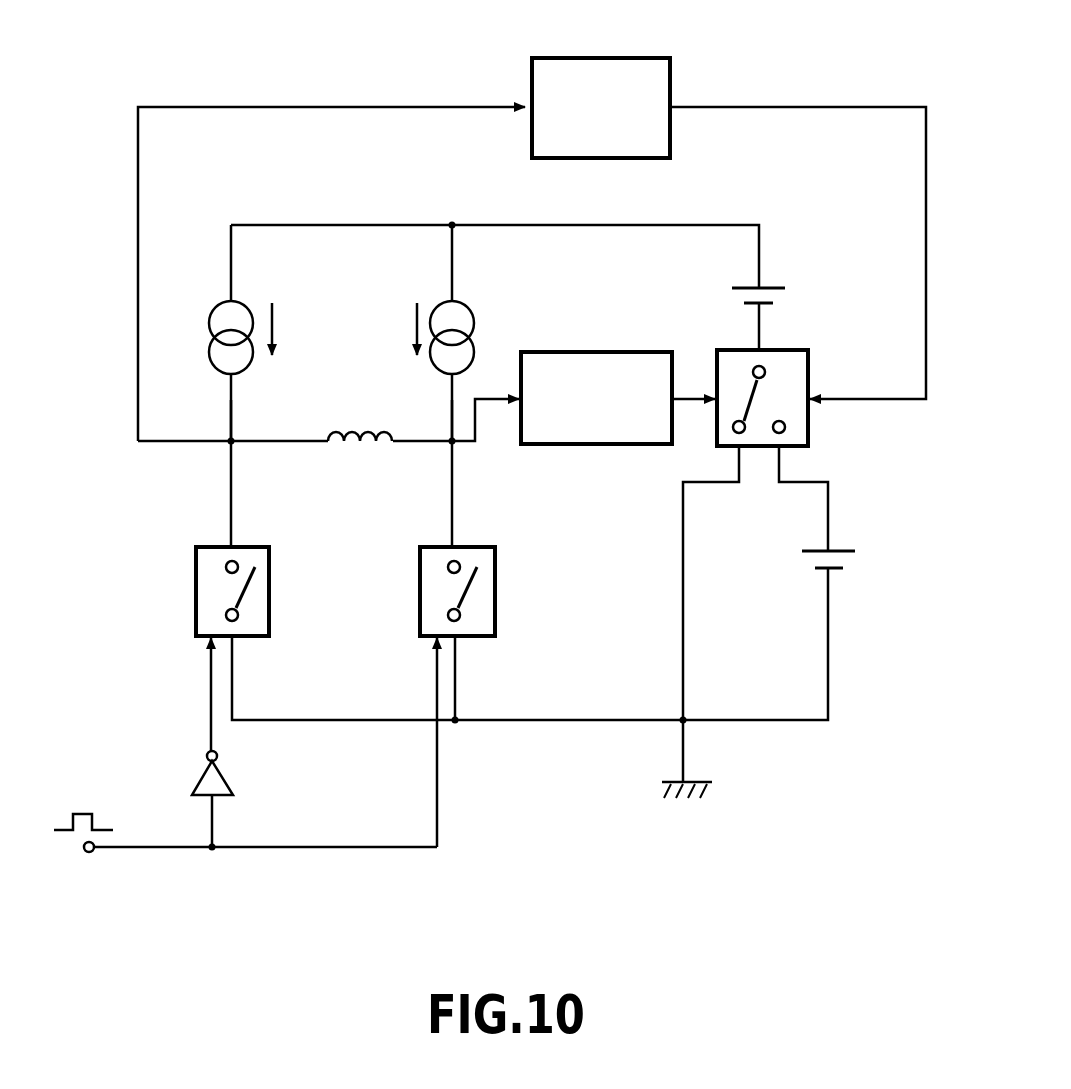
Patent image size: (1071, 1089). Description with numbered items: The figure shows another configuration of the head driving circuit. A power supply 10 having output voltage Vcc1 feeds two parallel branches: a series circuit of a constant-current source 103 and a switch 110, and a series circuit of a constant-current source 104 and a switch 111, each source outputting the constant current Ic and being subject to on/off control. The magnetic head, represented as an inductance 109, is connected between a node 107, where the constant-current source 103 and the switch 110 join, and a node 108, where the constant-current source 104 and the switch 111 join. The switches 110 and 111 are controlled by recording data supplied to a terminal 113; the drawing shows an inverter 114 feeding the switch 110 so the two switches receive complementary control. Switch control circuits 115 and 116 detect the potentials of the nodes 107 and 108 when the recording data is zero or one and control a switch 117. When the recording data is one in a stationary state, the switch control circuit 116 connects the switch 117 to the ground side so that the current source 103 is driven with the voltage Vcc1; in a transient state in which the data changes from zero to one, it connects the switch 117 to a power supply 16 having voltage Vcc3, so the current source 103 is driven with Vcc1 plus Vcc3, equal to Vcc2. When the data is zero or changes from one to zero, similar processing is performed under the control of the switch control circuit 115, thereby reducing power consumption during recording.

The power supply 10 is at (734, 290).
The power supply 16 is at (808, 560).
The constant-current source 103 is at (248, 305).
The constant-current source 104 is at (467, 305).
The node 107 is at (224, 452).
The node 108 is at (444, 452).
The inductance 109 is at (362, 418).
The switch 110 is at (270, 557).
The switch 111 is at (496, 557).
The terminal 113 is at (88, 853).
The inverter 114 is at (228, 782).
The switch control circuit 115 is at (600, 444).
The switch control circuit 116 is at (619, 58).
The switch 117 is at (810, 375).